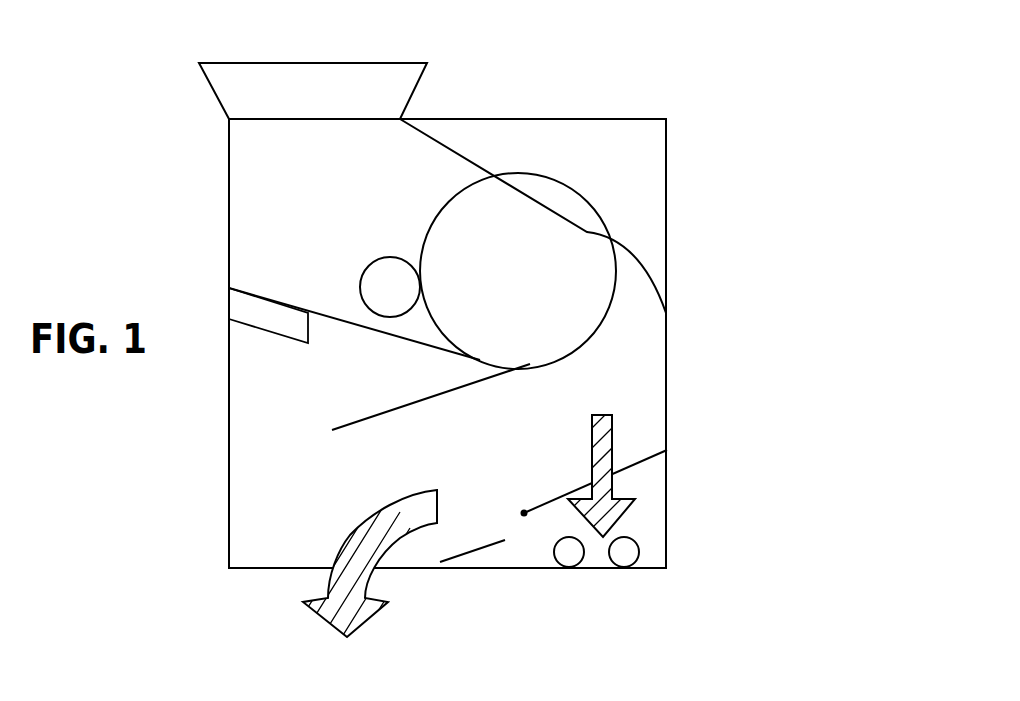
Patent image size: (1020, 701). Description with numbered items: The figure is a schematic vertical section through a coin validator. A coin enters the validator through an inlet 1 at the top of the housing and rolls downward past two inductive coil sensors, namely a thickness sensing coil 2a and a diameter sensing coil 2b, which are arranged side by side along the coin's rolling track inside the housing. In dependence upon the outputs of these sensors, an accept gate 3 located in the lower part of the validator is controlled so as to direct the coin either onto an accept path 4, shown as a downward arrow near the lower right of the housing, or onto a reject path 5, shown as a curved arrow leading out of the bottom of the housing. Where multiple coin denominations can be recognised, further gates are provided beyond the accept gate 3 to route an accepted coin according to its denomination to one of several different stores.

The inlet 1 is at (321, 63).
The thickness sensing coil 2a is at (390, 256).
The diameter sensing coil 2b is at (581, 192).
The accept gate 3 is at (544, 504).
The accept path 4 is at (613, 432).
The reject path 5 is at (360, 524).